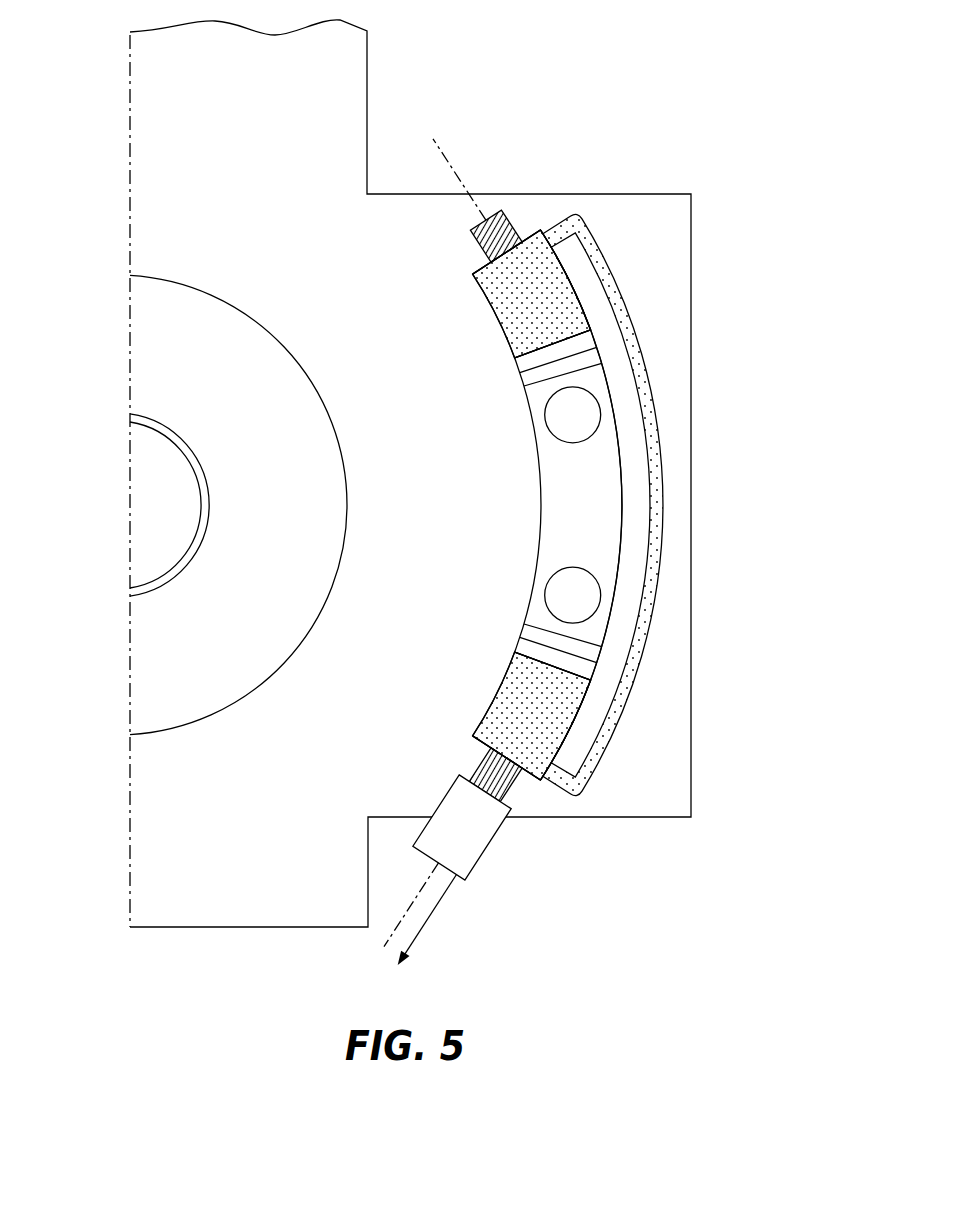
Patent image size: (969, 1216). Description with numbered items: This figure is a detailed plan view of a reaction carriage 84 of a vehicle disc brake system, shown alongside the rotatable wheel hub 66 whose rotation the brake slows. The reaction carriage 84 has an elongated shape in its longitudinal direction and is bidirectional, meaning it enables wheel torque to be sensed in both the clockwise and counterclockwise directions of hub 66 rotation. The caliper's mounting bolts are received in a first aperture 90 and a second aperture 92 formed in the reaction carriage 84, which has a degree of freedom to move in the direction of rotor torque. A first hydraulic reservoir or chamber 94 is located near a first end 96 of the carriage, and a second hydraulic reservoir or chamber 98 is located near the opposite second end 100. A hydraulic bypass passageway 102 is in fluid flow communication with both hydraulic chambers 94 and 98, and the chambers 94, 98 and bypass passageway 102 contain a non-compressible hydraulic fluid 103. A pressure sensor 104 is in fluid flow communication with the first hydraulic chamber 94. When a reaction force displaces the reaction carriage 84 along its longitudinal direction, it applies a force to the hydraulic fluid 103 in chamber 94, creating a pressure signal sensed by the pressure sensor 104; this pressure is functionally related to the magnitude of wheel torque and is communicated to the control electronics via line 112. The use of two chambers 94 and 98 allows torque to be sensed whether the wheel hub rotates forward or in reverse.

The wheel hub 66 is at (160, 502).
The reaction carriage 84 is at (538, 497).
The first aperture 90 is at (575, 597).
The second aperture 92 is at (578, 420).
The first hydraulic chamber 94 is at (478, 745).
The first end 96 is at (477, 698).
The second hydraulic chamber 98 is at (528, 230).
The second end 100 is at (466, 292).
The hydraulic bypass passageway 102 is at (655, 531).
The hydraulic fluid 103 is at (533, 310).
The pressure sensor 104 is at (463, 848).
The line 112 is at (427, 916).